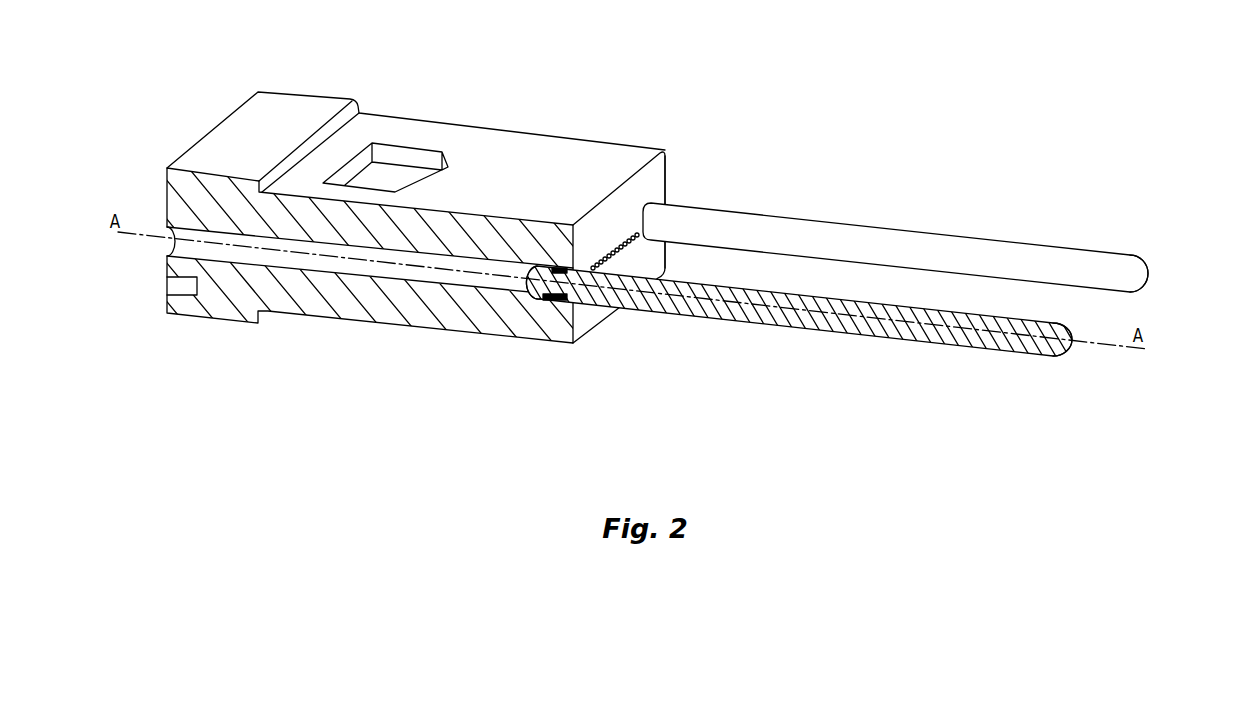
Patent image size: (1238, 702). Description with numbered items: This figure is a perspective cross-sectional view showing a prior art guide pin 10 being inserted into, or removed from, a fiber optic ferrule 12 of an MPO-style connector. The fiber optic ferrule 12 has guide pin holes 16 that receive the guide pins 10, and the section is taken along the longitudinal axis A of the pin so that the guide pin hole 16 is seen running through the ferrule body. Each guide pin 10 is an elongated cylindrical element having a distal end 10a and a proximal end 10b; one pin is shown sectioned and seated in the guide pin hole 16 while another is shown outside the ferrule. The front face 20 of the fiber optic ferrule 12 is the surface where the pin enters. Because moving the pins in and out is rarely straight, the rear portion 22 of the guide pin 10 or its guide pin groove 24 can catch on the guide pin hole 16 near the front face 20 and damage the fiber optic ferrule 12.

The guide pin 10 is at (975, 236).
The distal end 10a is at (1157, 240).
The proximal end 10b is at (545, 364).
The fiber optic ferrule 12 is at (607, 148).
The guide pin hole 16 is at (310, 263).
The front face 20 is at (665, 173).
The rear portion 22 is at (543, 302).
The guide pin groove 24 is at (575, 343).